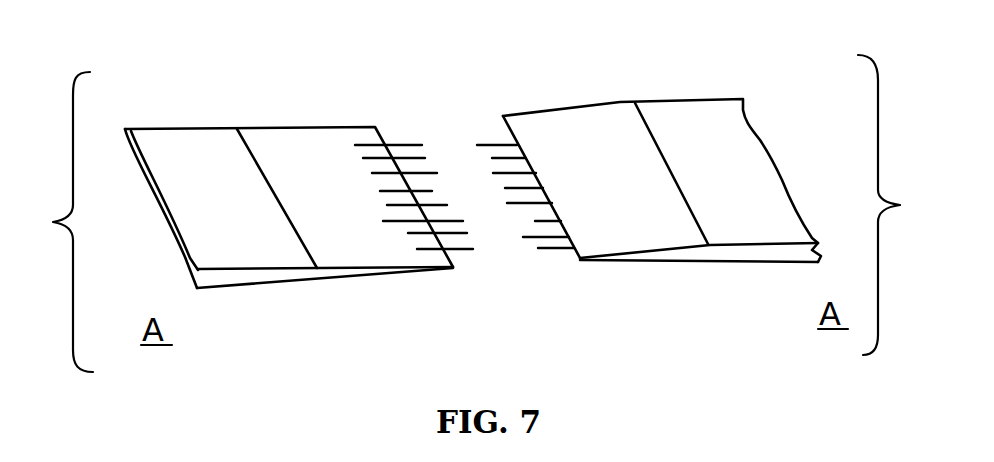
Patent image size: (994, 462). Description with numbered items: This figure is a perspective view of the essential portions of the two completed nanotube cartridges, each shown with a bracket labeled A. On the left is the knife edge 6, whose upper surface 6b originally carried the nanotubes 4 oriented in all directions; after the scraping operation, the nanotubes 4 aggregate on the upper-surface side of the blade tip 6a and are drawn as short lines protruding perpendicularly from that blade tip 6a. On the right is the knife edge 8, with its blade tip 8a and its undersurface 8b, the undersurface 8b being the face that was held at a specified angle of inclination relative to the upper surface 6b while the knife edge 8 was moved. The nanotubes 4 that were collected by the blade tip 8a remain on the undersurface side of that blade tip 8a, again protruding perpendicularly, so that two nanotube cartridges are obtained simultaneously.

The nanotubes 4 is at (410, 145).
The knife edge 6 is at (258, 275).
The blade tip 6a is at (337, 165).
The upper surface 6b is at (213, 192).
The knife edge 8 is at (714, 137).
The blade tip 8a is at (615, 167).
The undersurface 8b is at (740, 262).